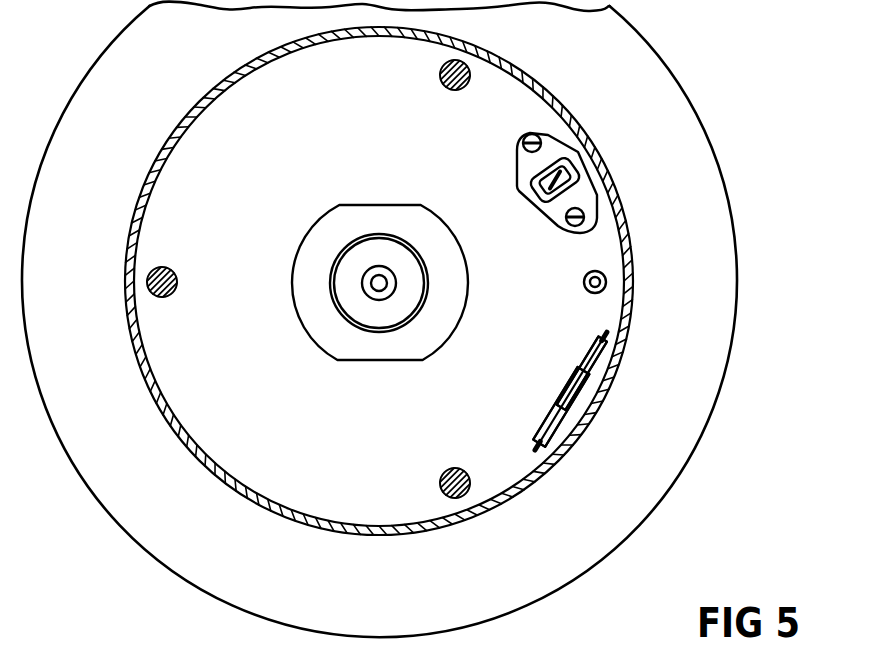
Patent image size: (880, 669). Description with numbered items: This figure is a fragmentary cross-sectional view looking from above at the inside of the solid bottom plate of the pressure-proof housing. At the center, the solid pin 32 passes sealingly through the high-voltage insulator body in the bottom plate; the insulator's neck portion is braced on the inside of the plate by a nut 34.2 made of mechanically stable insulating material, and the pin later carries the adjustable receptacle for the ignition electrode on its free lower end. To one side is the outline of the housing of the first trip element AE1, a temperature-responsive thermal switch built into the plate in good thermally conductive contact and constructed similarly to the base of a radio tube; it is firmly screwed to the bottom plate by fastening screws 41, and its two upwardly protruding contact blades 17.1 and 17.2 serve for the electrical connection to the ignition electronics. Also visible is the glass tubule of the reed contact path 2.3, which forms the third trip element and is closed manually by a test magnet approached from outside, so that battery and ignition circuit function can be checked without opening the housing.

The solid pin 32 is at (371, 283).
The nut 34.2 is at (327, 320).
The fastening screws 41 is at (529, 134).
The first trip element AE1 is at (516, 176).
The contact blade 17.1 is at (531, 188).
The contact blade 17.2 is at (571, 183).
The reed contact path 2.3 is at (595, 391).